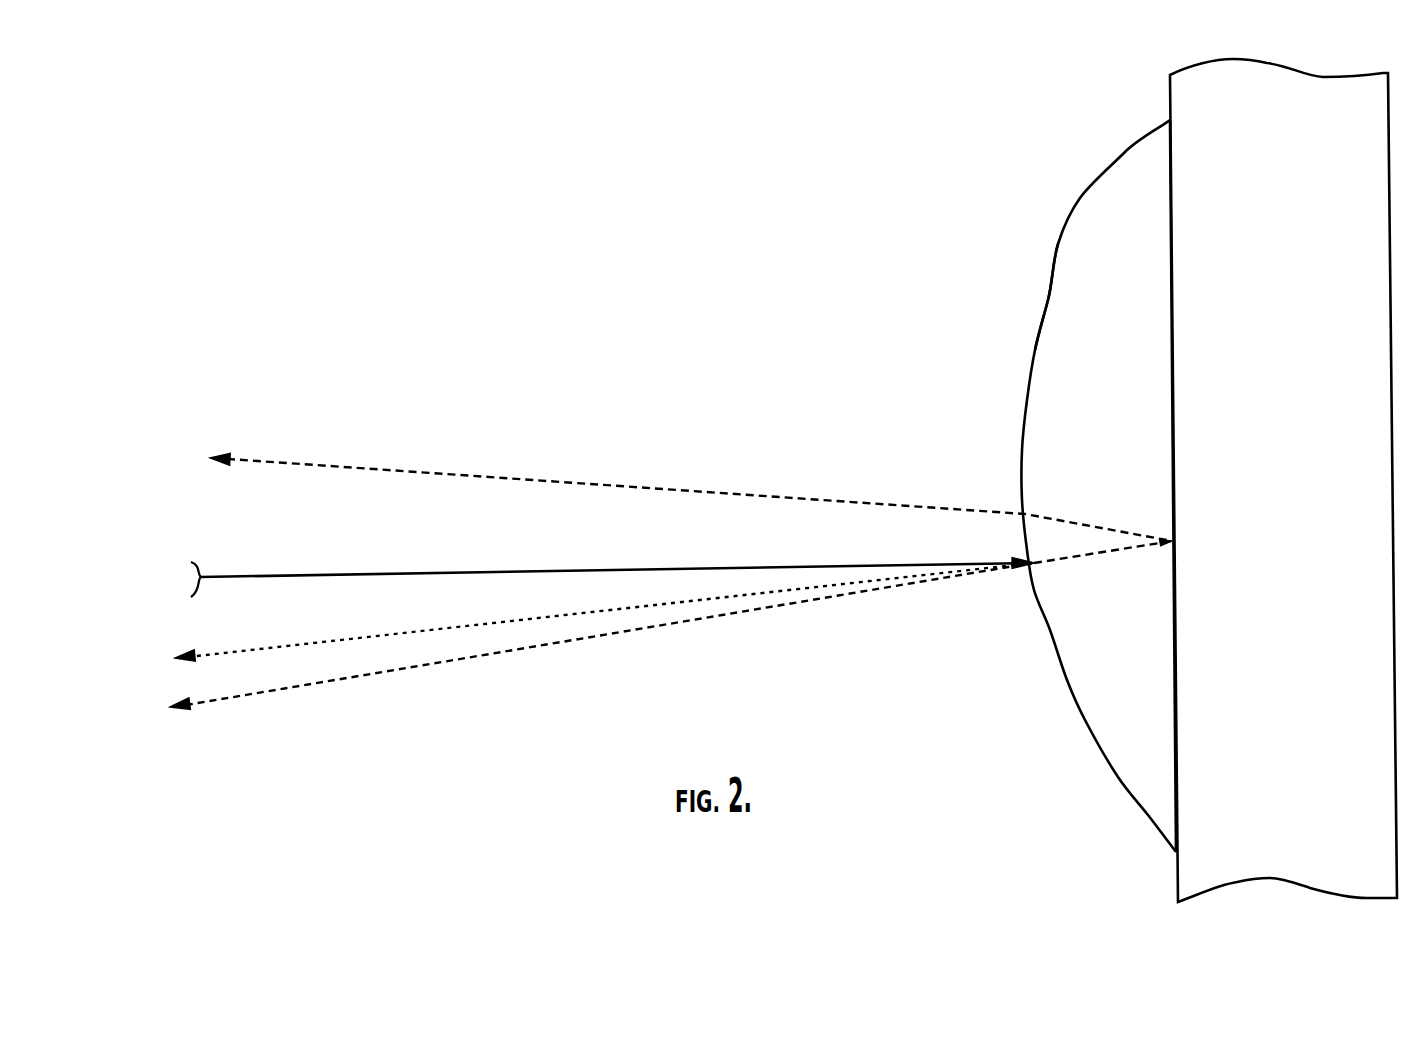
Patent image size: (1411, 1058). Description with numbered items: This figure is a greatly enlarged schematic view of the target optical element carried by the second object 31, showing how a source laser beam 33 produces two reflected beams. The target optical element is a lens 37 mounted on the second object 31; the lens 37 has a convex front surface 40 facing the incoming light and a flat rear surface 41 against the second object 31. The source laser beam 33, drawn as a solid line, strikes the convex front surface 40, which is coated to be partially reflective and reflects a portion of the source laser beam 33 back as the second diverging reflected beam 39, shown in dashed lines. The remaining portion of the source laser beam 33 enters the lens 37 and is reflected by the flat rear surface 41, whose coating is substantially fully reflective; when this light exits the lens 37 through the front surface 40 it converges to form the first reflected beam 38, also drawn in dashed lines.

The second object 31 is at (1300, 72).
The source laser beam 33 is at (408, 573).
The lens 37 is at (1050, 729).
The first reflected beam 38 is at (498, 477).
The second diverging reflected beam 39 is at (487, 657).
The convex front surface 40 is at (1050, 290).
The flat rear surface 41 is at (1170, 170).